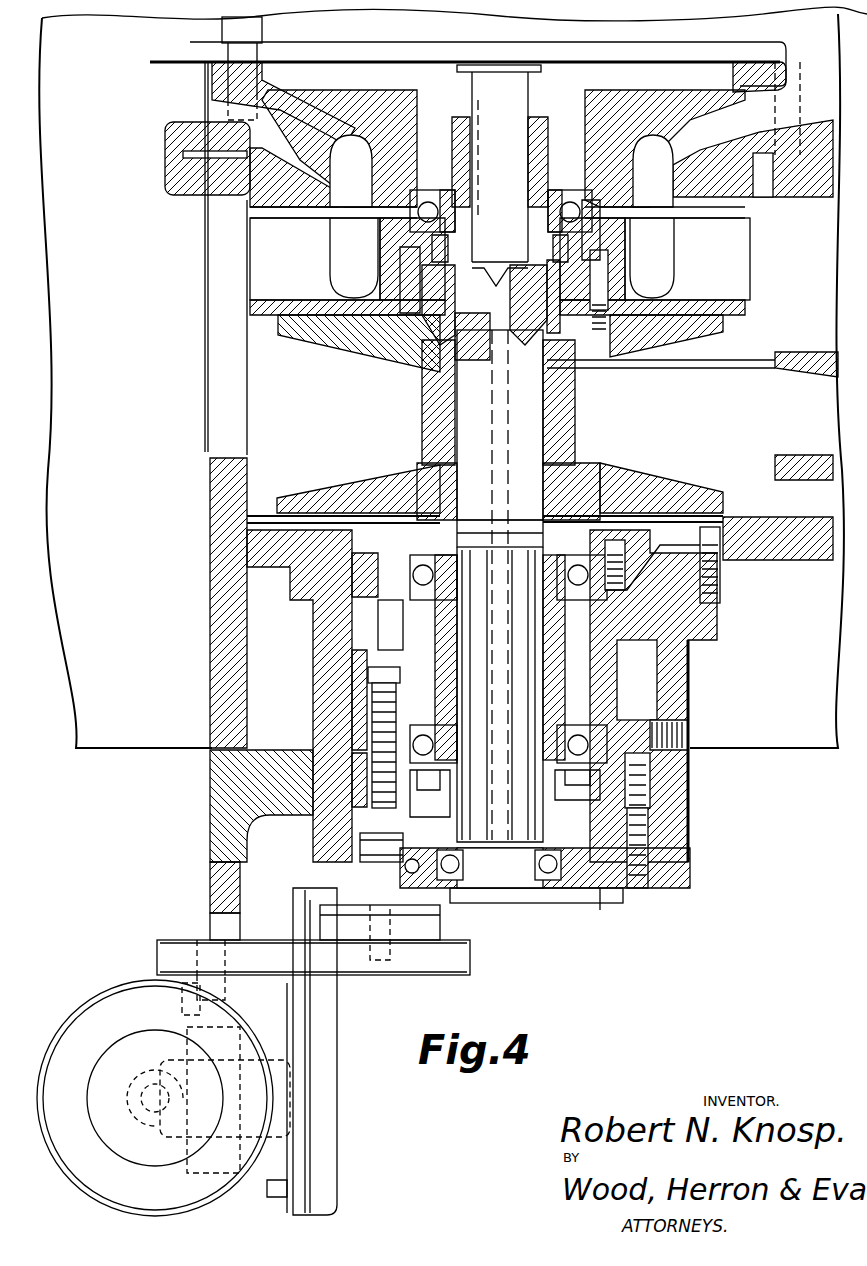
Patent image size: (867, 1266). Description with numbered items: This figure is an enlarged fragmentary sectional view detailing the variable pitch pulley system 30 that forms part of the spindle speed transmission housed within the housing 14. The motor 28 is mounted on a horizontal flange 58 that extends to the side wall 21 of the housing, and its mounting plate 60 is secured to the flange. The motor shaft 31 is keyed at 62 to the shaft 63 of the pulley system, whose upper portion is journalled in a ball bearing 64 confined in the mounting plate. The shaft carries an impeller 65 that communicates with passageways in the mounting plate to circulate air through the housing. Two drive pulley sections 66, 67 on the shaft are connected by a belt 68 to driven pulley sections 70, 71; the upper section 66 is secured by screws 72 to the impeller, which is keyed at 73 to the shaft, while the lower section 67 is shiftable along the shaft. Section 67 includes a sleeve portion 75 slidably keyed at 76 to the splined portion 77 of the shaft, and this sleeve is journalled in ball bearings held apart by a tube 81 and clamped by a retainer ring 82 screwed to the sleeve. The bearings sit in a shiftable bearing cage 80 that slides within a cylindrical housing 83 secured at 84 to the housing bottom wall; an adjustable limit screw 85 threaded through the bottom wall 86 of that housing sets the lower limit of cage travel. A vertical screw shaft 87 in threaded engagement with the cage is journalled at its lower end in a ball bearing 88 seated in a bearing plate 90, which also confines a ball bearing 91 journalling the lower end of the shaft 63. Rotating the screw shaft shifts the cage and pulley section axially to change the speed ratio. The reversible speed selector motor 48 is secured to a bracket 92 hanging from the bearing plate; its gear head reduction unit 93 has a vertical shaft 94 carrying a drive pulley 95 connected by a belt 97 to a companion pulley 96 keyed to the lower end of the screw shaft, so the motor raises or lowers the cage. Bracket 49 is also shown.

The housing 14 is at (118, 442).
The vertical wall 21 is at (215, 538).
The motor 28 is at (752, 22).
The variable pitch pulley system 30 is at (270, 348).
The motor shaft 31 is at (512, 100).
The speed selector motor 48 is at (92, 1032).
The bracket 49 is at (478, 970).
The horizontal flange 58 is at (183, 166).
The mounting plate 60 is at (360, 100).
The key 62 is at (470, 165).
The shaft 63 is at (470, 425).
The ball bearing 64 is at (428, 200).
The impeller 65 is at (262, 252).
The upper drive pulley section 66 is at (330, 335).
The drive pulley section 67 is at (345, 498).
The belt 68 is at (735, 382).
The driven pulley section 70 is at (815, 352).
The driven pulley section 71 is at (812, 455).
The screws 72 is at (598, 268).
The key 73 is at (550, 320).
The sleeve portion 75 is at (650, 628).
The key 76 is at (550, 708).
The splined portion 77 is at (550, 815).
The bearing cage 80 is at (348, 605).
The tube 81 is at (385, 650).
The retainer ring 82 is at (455, 795).
The cylindrical housing 83 is at (692, 806).
The securing means 84 is at (722, 586).
The adjustable limit screw 85 is at (660, 775).
The bottom wall 86 is at (600, 905).
The screw shaft 87 is at (372, 708).
The ball bearing 88 is at (358, 848).
The bearing plate 90 is at (690, 868).
The ball bearing 91 is at (545, 890).
The bracket 92 is at (310, 1138).
The gear head reduction unit 93 is at (152, 1130).
The vertical shaft 94 is at (183, 1018).
The drive pulley 95 is at (170, 940).
The companion pulley 96 is at (440, 925).
The belt 97 is at (275, 955).